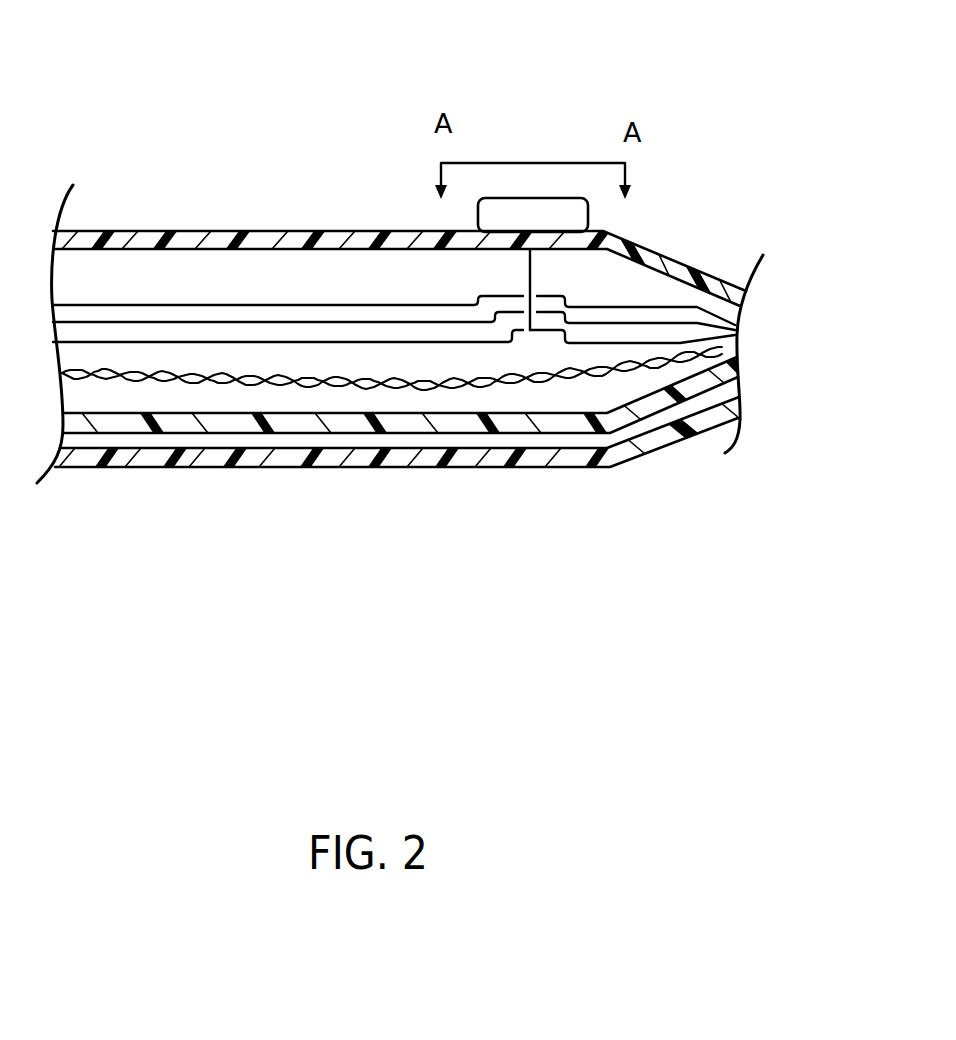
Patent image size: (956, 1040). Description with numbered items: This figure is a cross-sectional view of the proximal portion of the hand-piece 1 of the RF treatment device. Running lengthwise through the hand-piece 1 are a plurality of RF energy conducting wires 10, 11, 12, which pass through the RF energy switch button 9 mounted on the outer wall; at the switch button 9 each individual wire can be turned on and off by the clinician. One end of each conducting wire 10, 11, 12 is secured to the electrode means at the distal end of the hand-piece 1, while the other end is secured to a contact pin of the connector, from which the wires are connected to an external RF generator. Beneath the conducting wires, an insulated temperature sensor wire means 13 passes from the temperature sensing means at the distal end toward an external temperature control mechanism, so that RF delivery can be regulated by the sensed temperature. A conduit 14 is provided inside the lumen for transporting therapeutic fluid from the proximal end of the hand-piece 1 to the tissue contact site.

The hand-piece 1 is at (222, 229).
The RF energy switch button 9 is at (540, 193).
The RF energy conducting wire 10 is at (95, 302).
The RF energy conducting wire 11 is at (230, 322).
The RF energy conducting wire 12 is at (293, 340).
The insulated temperature sensor wire means 13 is at (243, 382).
The conduit 14 is at (415, 423).